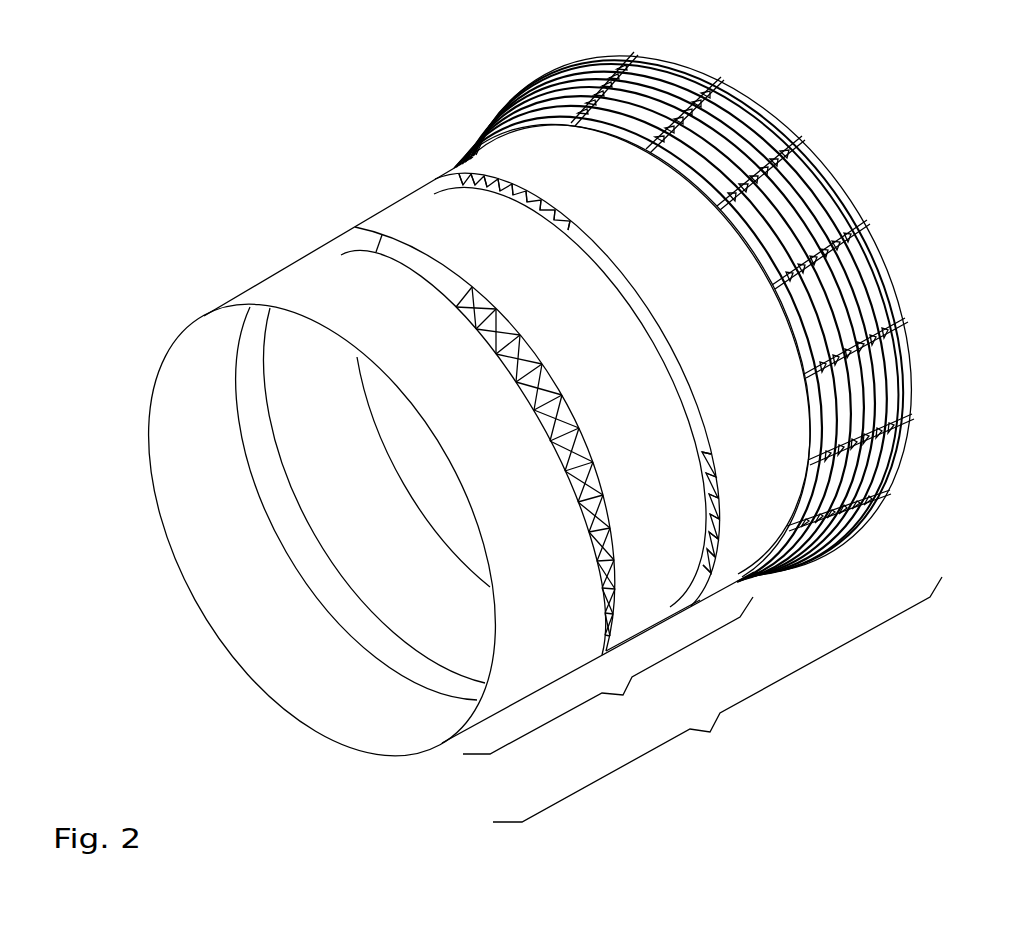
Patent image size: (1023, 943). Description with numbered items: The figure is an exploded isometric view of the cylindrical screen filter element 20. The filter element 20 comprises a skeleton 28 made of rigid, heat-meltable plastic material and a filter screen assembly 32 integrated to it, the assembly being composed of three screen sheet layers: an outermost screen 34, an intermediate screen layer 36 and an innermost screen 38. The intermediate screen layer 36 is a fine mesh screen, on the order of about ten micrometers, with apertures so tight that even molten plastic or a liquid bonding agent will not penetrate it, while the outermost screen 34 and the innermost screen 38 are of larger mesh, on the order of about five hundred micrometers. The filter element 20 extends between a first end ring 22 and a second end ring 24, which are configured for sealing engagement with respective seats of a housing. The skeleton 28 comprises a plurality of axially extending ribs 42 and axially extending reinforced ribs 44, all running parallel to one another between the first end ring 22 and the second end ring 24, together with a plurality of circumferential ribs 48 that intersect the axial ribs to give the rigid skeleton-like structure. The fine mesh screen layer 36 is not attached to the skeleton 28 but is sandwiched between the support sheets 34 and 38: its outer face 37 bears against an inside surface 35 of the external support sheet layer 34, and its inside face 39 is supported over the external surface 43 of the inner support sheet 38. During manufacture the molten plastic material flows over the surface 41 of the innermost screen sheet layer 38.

The filter element 20 is at (717, 699).
The first end ring 22 is at (817, 155).
The second end ring 24 is at (820, 430).
The skeleton 28 is at (688, 62).
The filter screen assembly 32 is at (608, 675).
The outermost screen 34 is at (462, 178).
The inside surface 35 is at (707, 547).
The intermediate screen layer 36 is at (393, 225).
The outer face 37 is at (674, 520).
The innermost screen 38 is at (283, 296).
The inside face 39 is at (397, 544).
The surface 41 is at (305, 655).
The axially extending ribs 42 is at (905, 330).
The external surface 43 is at (544, 582).
The axially extending reinforced ribs 44 is at (873, 240).
The circumferential ribs 48 is at (887, 480).